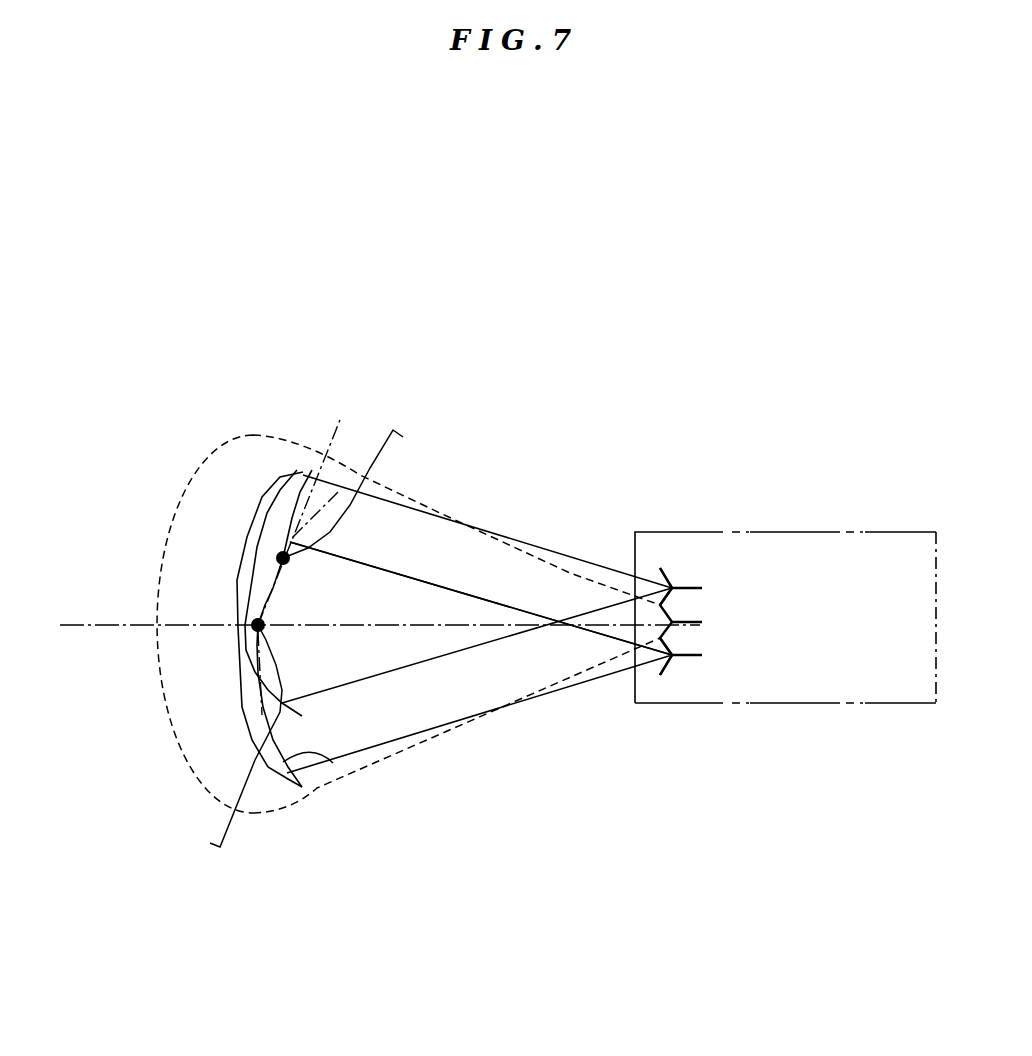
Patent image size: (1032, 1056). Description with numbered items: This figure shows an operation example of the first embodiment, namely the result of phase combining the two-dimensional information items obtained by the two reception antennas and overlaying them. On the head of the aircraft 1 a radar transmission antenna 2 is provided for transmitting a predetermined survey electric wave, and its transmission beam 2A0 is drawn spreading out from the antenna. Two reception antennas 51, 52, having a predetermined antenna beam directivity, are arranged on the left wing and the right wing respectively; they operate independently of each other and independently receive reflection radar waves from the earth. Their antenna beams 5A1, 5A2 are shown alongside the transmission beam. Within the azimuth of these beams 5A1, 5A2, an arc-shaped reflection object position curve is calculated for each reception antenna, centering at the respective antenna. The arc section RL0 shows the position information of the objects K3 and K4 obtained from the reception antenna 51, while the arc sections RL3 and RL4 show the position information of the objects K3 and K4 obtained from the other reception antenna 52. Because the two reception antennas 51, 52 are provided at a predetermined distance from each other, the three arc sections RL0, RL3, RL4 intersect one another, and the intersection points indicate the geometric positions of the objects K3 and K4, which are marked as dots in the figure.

The aircraft 1 is at (868, 532).
The radar transmission antenna 2 is at (668, 608).
The reception antenna 51 is at (663, 677).
The reception antenna 52 is at (663, 567).
The transmission beam 2A0 is at (570, 573).
The antenna beam 5A1 is at (430, 580).
The antenna beam 5A2 is at (303, 472).
The object K3 is at (403, 437).
The object K4 is at (210, 843).
The arc section RL0 is at (333, 763).
The arc section RL3 is at (293, 517).
The arc section RL4 is at (258, 549).